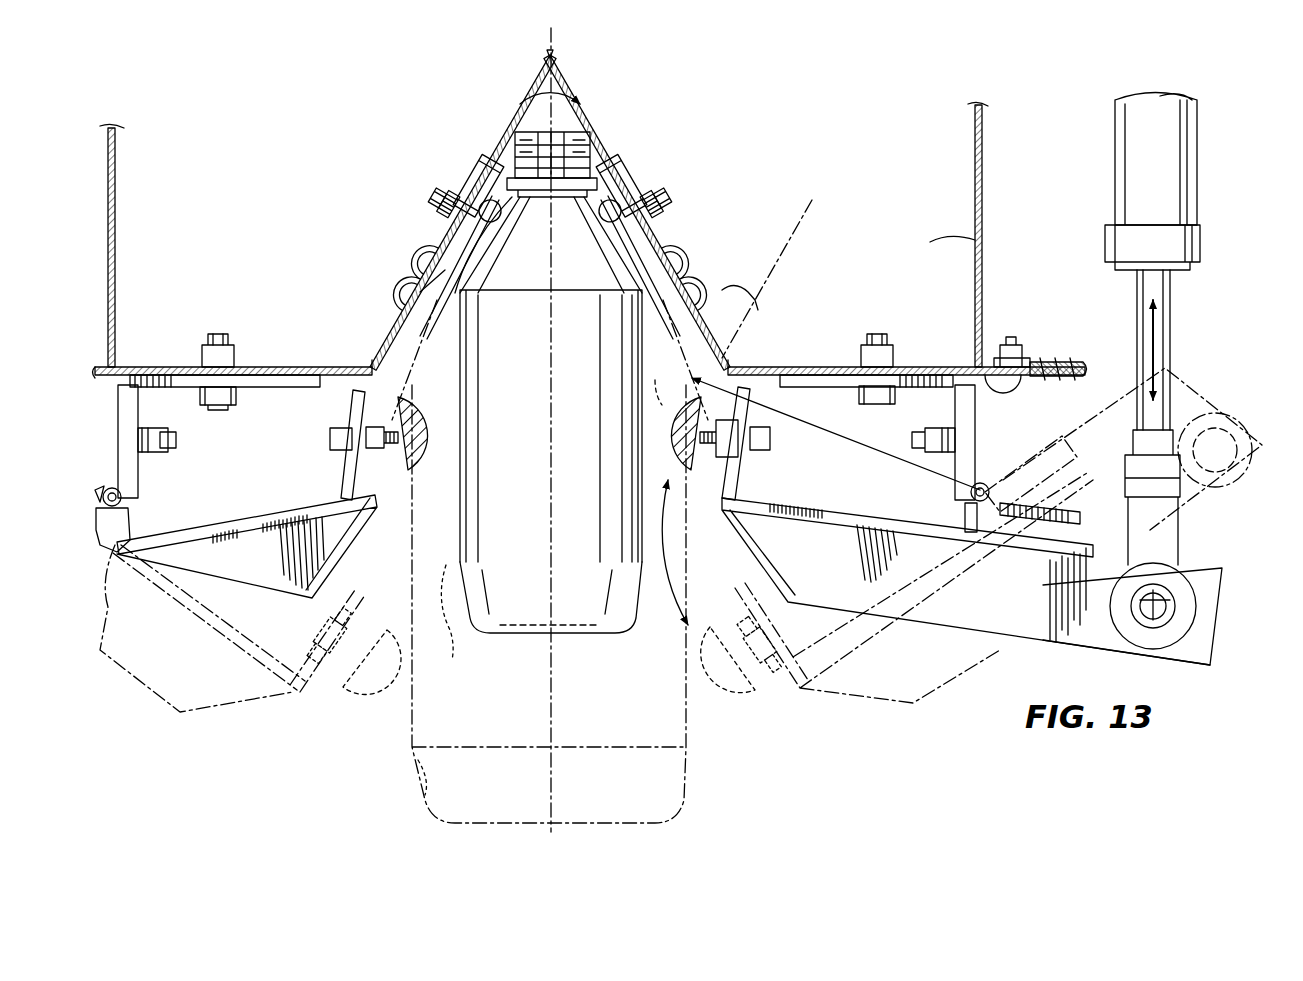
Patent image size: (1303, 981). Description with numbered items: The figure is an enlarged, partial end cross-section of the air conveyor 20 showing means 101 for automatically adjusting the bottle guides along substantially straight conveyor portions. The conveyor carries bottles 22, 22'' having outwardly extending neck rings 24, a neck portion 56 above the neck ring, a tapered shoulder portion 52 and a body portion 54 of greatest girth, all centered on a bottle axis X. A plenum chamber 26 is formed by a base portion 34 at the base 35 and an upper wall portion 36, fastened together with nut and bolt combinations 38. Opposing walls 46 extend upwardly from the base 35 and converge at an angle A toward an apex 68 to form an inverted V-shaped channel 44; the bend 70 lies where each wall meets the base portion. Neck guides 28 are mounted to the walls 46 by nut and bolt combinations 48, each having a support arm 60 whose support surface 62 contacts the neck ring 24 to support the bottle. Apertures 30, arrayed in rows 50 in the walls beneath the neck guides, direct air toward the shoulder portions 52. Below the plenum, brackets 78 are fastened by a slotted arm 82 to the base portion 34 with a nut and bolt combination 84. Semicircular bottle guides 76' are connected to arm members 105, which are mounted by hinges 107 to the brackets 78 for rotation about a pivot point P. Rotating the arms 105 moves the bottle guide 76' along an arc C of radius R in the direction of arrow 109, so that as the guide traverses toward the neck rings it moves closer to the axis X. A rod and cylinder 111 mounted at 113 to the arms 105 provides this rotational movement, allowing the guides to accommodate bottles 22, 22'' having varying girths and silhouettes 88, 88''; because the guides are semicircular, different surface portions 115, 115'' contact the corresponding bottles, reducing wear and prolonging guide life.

The air conveyor 20 is at (986, 208).
The bottles 22 is at (523, 604).
The bottle 22'' is at (551, 461).
The neck rings 24 is at (518, 200).
The plenum chamber 26 is at (984, 236).
The neck guides 28 is at (505, 148).
The apertures 30 is at (412, 262).
The base portion 34 is at (262, 365).
The base 35 is at (990, 378).
The upper wall portion 36 is at (118, 198).
The nut and bolt combinations 38 is at (1018, 337).
The channel 44 is at (410, 296).
The opposing walls 46 is at (440, 225).
The nut and bolt combinations 48 is at (438, 192).
The rows 50 is at (735, 280).
The shoulder portions 52 is at (550, 272).
The body portion 54 is at (470, 372).
The neck portion 56 is at (598, 130).
The support arm 60 is at (478, 180).
The support surface 62 is at (462, 252).
The apex 68 is at (552, 55).
The bend 70 is at (368, 364).
The bottle guides 76' is at (550, 448).
The brackets 78 is at (140, 481).
The slotted arm 82 is at (178, 387).
The nut and bolt combination 84 is at (230, 398).
The bottle silhouette 88 is at (392, 756).
The bottle silhouette 88'' is at (465, 621).
The adjusting means 101 is at (1195, 515).
The arm members 105 is at (212, 524).
The hinges 107 is at (1060, 508).
The arrow 109 is at (685, 546).
The rod and cylinder 111 is at (1203, 238).
The mounting point 113 is at (1172, 606).
The surface portion 115 is at (666, 682).
The surface portion 115'' is at (666, 378).
The angle A is at (575, 95).
The arc C is at (806, 206).
The pivot point P is at (987, 484).
The radius R is at (856, 438).
The bottle axis X is at (551, 368).